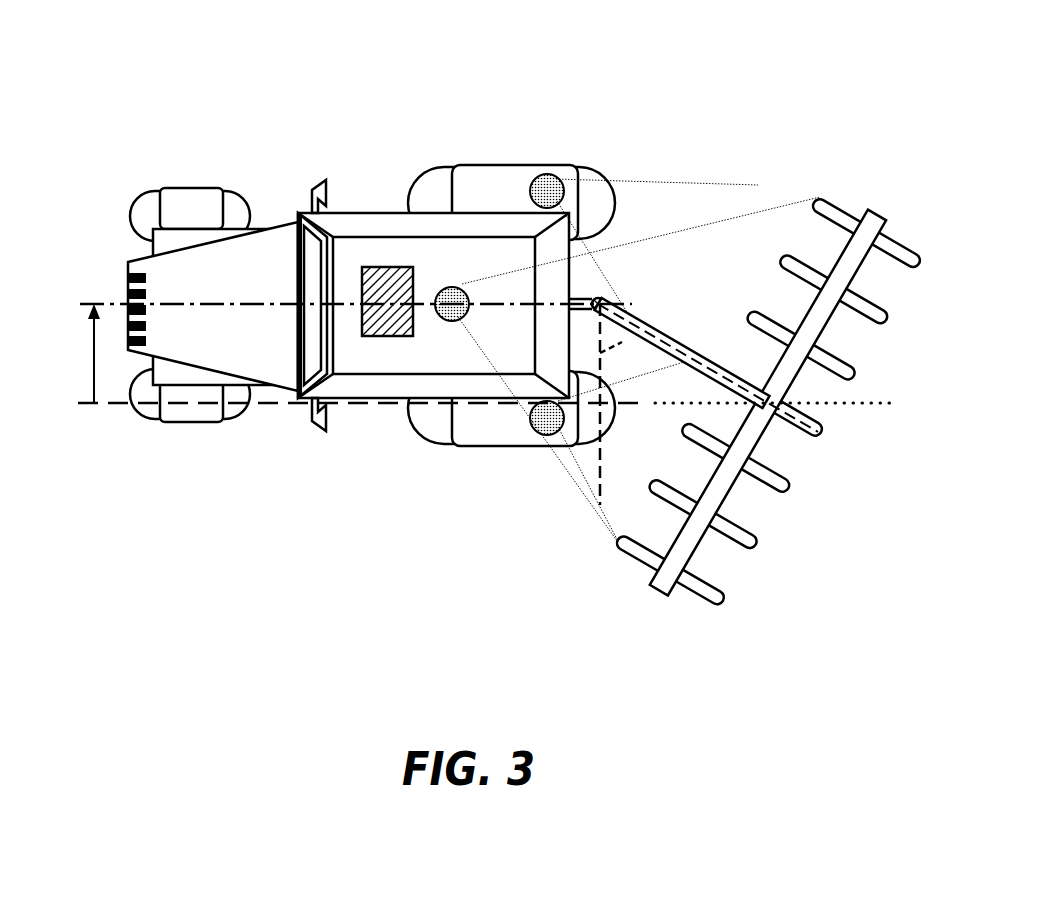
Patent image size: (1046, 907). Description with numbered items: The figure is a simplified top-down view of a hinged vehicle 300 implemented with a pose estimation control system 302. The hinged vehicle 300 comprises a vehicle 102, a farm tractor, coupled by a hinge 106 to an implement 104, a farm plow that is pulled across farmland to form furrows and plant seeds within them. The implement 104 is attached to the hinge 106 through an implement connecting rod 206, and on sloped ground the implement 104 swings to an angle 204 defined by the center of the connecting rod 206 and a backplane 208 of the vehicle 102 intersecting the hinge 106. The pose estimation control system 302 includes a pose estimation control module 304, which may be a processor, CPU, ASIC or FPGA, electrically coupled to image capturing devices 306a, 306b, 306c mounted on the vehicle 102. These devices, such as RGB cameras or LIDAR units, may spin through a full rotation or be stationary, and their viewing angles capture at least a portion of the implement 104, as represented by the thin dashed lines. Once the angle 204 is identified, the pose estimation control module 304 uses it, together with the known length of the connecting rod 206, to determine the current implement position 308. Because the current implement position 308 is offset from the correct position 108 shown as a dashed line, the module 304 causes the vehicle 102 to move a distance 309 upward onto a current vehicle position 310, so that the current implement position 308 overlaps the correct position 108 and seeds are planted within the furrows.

The hinged vehicle 300 is at (188, 62).
The vehicle 102 is at (272, 263).
The implement 104 is at (667, 594).
The hinge 106 is at (600, 297).
The correct position 108 is at (90, 407).
The angle 204 is at (622, 340).
The implement connecting rod 206 is at (658, 323).
The backplane 208 is at (598, 463).
The pose estimation control system 302 is at (404, 246).
The pose estimation control module 304 is at (375, 337).
The image capturing device 306a is at (453, 287).
The image capturing device 306b is at (549, 174).
The image capturing device 306c is at (528, 420).
The current implement position 308 is at (857, 405).
The distance 309 is at (88, 355).
The current vehicle position 310 is at (100, 302).